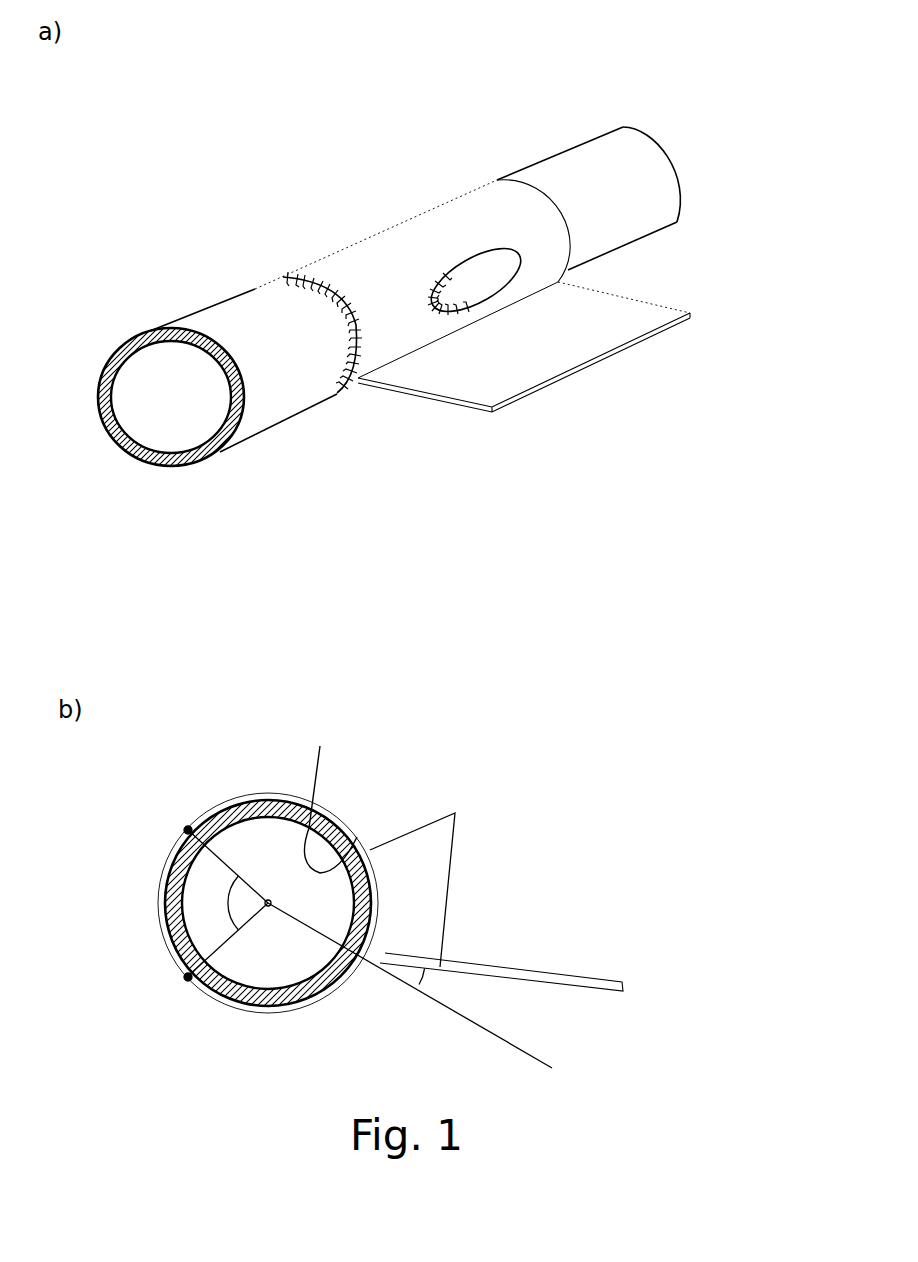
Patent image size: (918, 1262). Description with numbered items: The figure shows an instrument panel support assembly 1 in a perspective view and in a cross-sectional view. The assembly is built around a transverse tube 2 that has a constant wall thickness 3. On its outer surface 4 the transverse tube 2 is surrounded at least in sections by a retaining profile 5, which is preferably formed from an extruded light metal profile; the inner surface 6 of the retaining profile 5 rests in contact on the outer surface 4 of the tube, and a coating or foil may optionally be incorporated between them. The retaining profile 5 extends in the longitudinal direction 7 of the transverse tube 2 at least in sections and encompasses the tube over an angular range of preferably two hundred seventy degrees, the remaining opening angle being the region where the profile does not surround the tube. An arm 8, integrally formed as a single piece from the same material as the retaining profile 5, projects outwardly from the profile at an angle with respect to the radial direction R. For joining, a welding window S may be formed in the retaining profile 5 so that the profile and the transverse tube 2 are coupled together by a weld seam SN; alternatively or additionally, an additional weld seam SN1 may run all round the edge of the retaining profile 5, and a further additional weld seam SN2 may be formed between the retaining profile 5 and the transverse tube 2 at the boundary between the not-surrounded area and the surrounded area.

In FIG. 1a, the instrument panel support assembly 1 is at (270, 203).
In FIG. 1b, the instrument panel support assembly 1 is at (193, 746).
In FIG. 1a, the transverse tube 2 is at (232, 327).
In FIG. 1b, the transverse tube 2 is at (166, 918).
In FIG. 1a, the wall thickness 3 is at (181, 420).
In FIG. 1b, the wall thickness 3 is at (217, 932).
In FIG. 1a, the outer surface 4 is at (267, 392).
In FIG. 1b, the outer surface 4 is at (178, 862).
In FIG. 1a, the retaining profile 5 is at (397, 257).
In FIG. 1b, the retaining profile 5 is at (333, 806).
In FIG. 1b, the inner surface 6 is at (275, 802).
In FIG. 1a, the longitudinal direction 7 is at (458, 128).
In FIG. 1a, the arm 8 is at (480, 384).
In FIG. 1b, the arm 8 is at (495, 972).
In FIG. 1a, the welding window S is at (448, 263).
In FIG. 1a, the weld seam SN is at (405, 295).
In FIG. 1a, the additional weld seam SN1 is at (320, 278).
In FIG. 1b, the additional weld seam SN2 is at (186, 827).
In FIG. 1b, the radial direction R is at (410, 980).